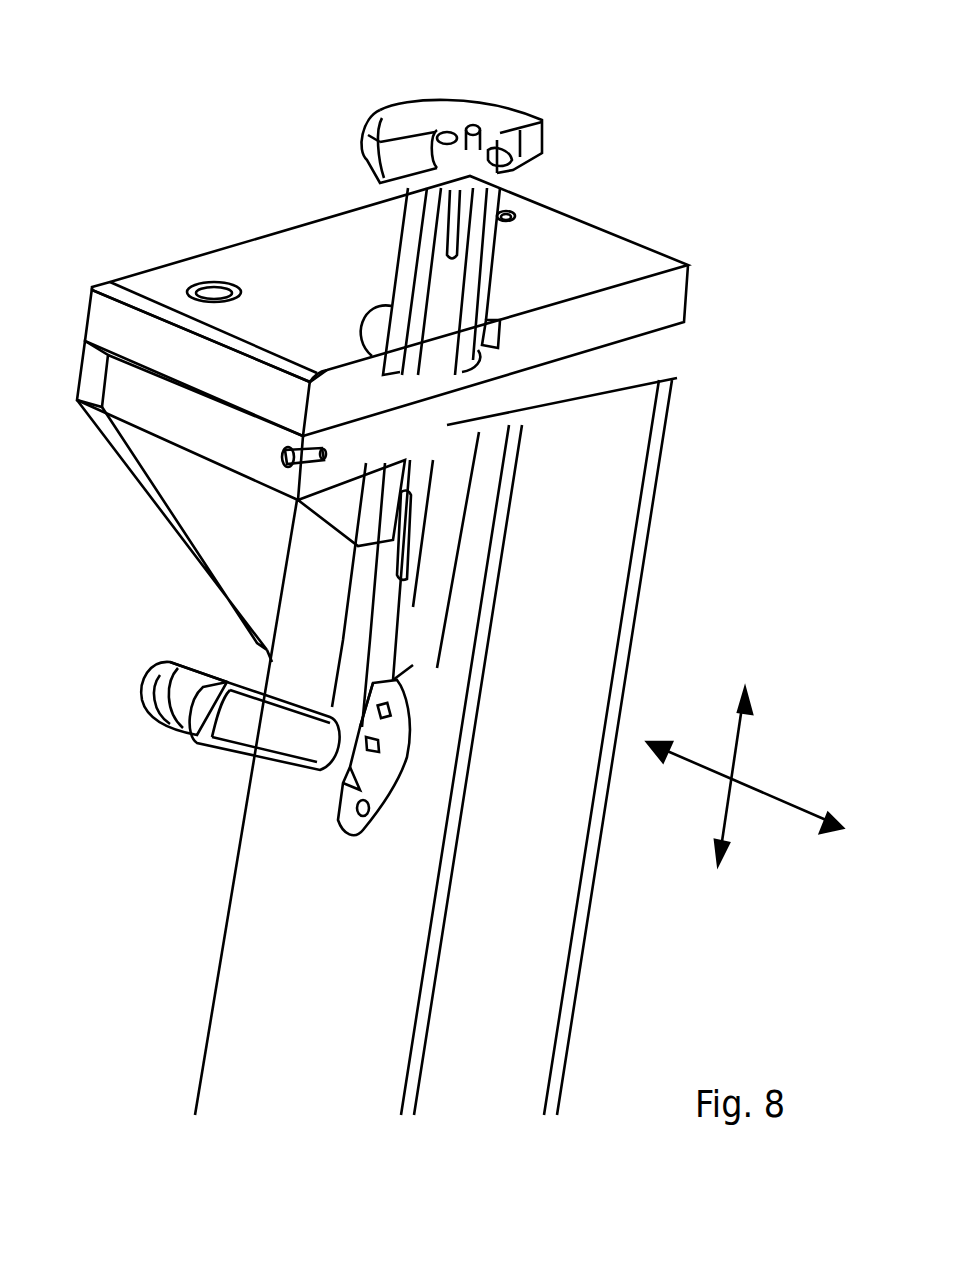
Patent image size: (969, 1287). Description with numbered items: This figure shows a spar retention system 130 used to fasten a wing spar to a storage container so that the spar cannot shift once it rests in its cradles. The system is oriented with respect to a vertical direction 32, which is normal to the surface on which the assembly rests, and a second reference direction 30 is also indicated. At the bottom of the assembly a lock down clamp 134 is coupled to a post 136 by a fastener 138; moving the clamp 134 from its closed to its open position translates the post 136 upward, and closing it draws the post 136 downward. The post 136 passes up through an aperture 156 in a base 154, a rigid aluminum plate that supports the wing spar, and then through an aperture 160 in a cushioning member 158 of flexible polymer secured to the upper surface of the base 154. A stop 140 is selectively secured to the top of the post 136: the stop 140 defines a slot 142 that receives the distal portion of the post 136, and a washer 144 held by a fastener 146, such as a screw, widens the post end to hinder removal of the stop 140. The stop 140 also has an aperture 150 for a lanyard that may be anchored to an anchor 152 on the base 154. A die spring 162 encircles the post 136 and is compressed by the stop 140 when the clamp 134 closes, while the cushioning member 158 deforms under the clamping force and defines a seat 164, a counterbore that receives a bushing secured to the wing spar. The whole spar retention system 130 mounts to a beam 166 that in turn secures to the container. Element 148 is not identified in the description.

The spar retention system 130 is at (222, 172).
The lock down clamp 134 is at (425, 617).
The post 136 is at (445, 287).
The fastener 138 is at (413, 508).
The stop 140 is at (512, 115).
The slot 142 is at (417, 153).
The washer 144 is at (443, 140).
The fastener 146 is at (473, 126).
The bolt 148 is at (505, 157).
The aperture 150 is at (507, 153).
The anchor 152 is at (280, 460).
The base 154 is at (190, 501).
The aperture 156 is at (448, 423).
The cushioning member 158 is at (386, 323).
The aperture 160 is at (470, 367).
The die spring 162 is at (483, 263).
The seat 164 is at (490, 318).
The beam 166 is at (433, 747).
The first axis 30 is at (758, 792).
The vertical direction 32 is at (738, 743).